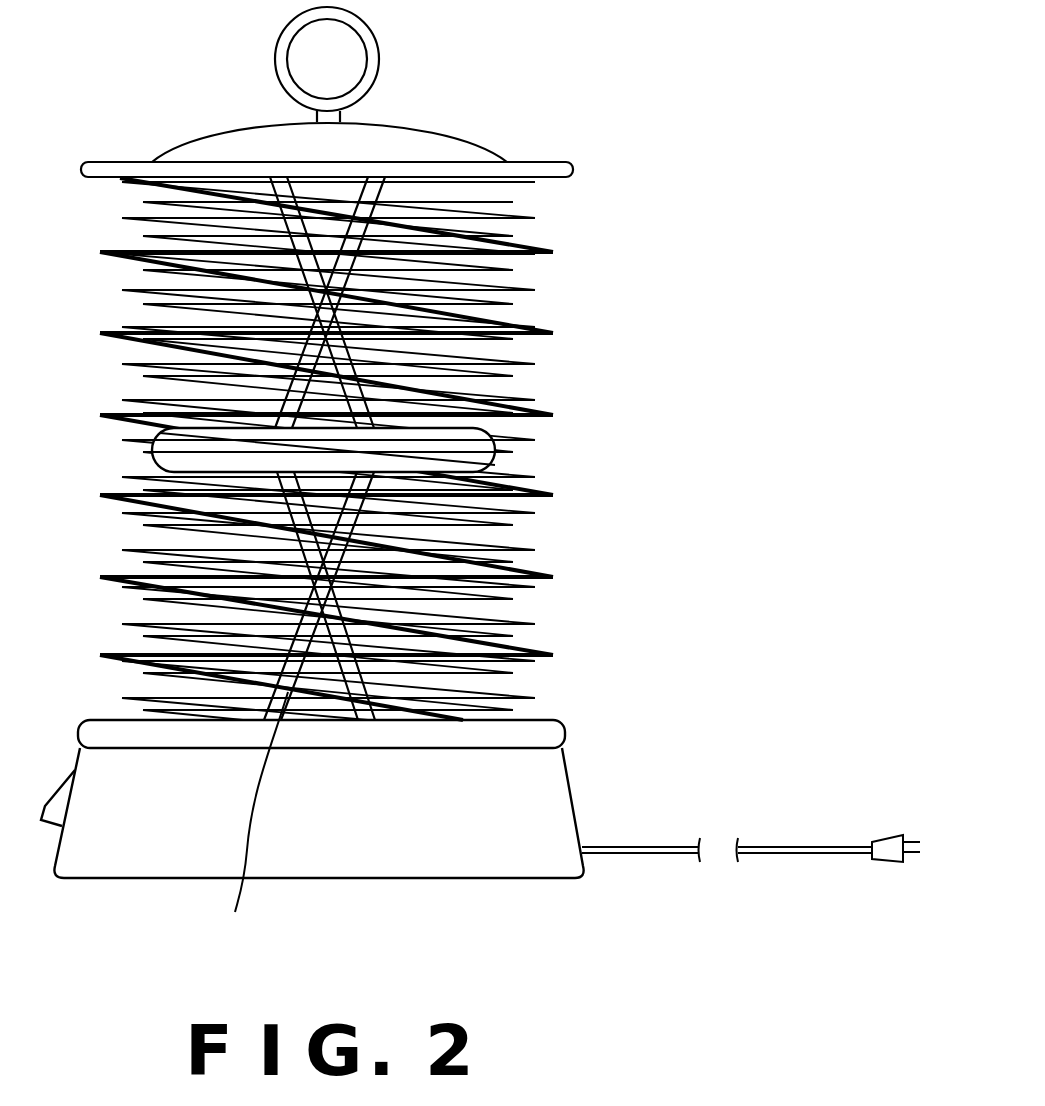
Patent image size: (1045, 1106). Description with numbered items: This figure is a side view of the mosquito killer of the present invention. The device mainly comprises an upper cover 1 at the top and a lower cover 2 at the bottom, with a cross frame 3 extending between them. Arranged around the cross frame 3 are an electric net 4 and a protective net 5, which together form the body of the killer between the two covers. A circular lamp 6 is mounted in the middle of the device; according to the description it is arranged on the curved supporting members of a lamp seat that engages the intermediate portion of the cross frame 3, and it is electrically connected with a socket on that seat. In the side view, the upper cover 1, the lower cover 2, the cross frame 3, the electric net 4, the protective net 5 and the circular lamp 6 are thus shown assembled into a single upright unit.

The upper cover 1 is at (435, 150).
The lower cover 2 is at (405, 868).
The cross frame 3 is at (253, 820).
The electric net 4 is at (516, 626).
The protective net 5 is at (547, 654).
The circular lamp 6 is at (483, 453).